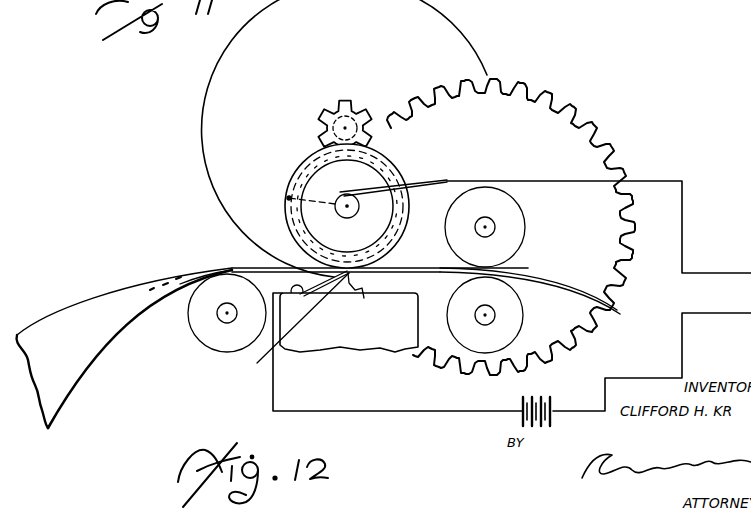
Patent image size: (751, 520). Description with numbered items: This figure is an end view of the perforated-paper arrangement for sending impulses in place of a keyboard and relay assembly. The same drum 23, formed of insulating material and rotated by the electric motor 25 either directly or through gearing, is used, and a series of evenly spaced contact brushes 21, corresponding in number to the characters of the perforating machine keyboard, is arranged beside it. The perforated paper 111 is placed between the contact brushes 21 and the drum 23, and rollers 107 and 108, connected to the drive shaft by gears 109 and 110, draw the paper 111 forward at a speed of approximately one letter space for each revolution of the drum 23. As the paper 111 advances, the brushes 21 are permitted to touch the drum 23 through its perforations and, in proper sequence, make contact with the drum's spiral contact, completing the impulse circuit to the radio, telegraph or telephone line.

The contact brushes 21 is at (327, 331).
The drum 23 is at (289, 220).
The electric motor 25 is at (450, 28).
The roller 107 is at (512, 220).
The roller 108 is at (510, 314).
The gear 109 is at (548, 106).
The gear 110 is at (353, 103).
The paper web 111 is at (146, 288).